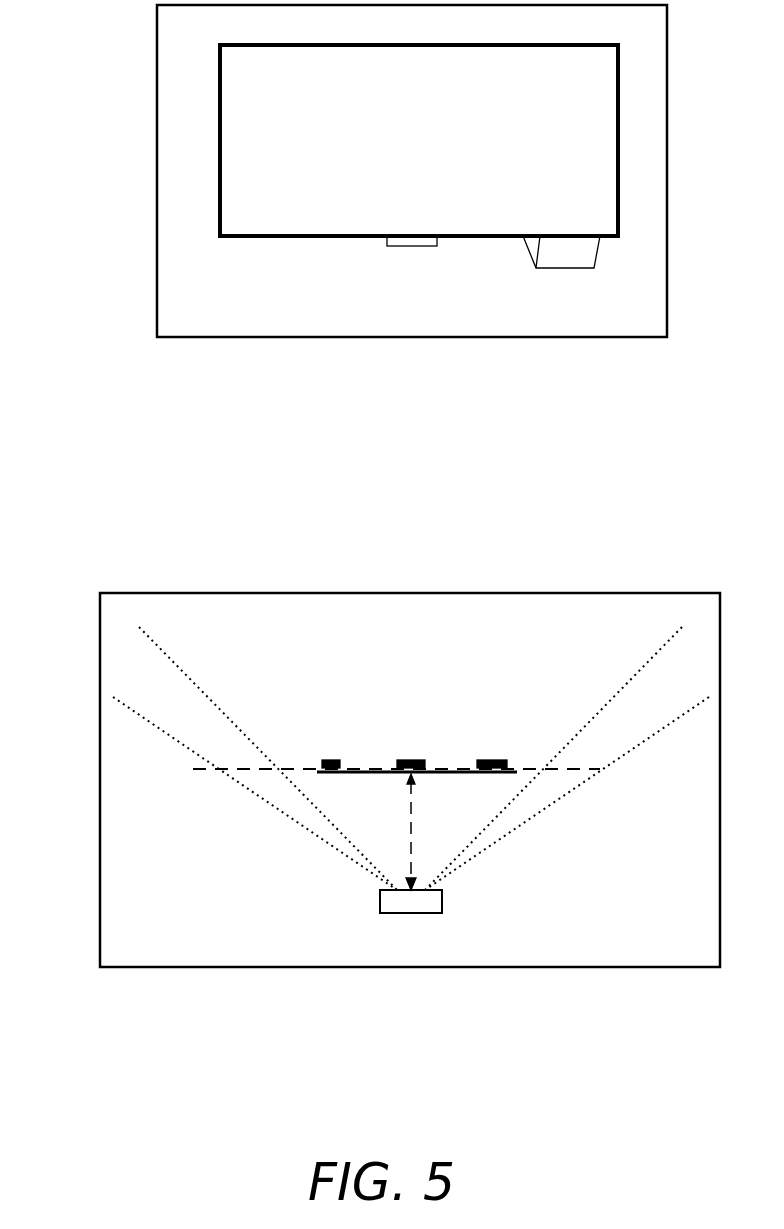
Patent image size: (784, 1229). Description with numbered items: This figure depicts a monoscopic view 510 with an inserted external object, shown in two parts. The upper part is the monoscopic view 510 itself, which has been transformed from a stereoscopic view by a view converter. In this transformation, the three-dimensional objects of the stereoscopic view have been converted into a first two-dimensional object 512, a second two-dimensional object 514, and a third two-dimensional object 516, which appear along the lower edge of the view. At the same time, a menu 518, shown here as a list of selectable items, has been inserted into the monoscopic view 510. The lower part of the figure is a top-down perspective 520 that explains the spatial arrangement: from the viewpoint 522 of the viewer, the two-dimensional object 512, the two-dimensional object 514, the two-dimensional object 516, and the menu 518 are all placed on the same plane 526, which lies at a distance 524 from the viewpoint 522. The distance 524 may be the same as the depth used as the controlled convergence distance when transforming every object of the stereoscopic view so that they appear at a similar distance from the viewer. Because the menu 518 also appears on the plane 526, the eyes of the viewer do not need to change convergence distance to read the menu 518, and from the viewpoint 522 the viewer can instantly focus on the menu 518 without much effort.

The monoscopic view 510 is at (157, 228).
The 2D object 512 is at (333, 758).
The 2D object 514 is at (410, 248).
The 2D object 516 is at (565, 270).
The menu 518 is at (252, 238).
The top-down perspective 520 is at (100, 787).
The viewpoint 522 is at (380, 902).
The distance 524 is at (410, 814).
The plane 526 is at (288, 766).